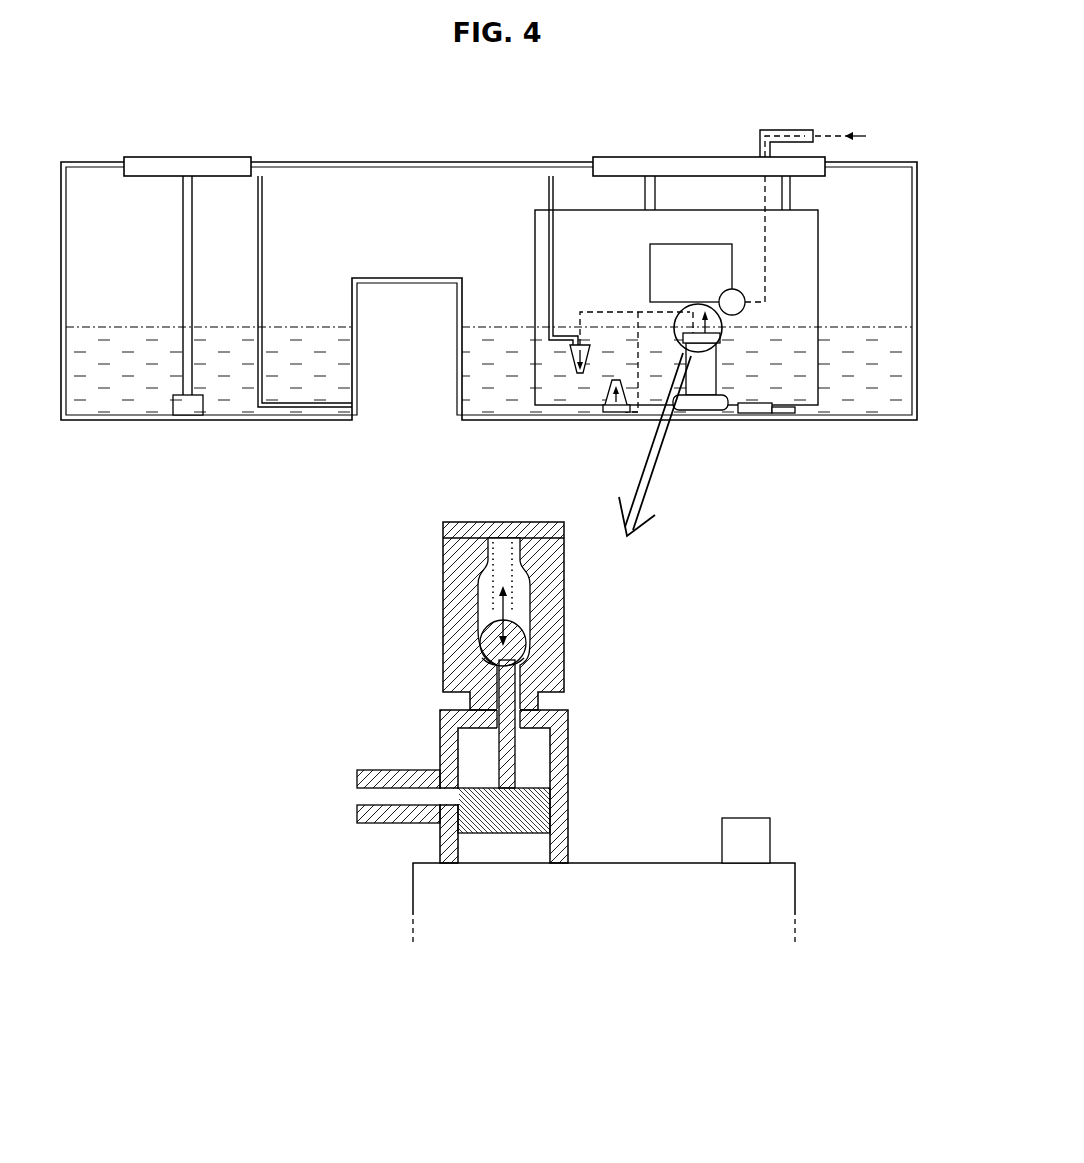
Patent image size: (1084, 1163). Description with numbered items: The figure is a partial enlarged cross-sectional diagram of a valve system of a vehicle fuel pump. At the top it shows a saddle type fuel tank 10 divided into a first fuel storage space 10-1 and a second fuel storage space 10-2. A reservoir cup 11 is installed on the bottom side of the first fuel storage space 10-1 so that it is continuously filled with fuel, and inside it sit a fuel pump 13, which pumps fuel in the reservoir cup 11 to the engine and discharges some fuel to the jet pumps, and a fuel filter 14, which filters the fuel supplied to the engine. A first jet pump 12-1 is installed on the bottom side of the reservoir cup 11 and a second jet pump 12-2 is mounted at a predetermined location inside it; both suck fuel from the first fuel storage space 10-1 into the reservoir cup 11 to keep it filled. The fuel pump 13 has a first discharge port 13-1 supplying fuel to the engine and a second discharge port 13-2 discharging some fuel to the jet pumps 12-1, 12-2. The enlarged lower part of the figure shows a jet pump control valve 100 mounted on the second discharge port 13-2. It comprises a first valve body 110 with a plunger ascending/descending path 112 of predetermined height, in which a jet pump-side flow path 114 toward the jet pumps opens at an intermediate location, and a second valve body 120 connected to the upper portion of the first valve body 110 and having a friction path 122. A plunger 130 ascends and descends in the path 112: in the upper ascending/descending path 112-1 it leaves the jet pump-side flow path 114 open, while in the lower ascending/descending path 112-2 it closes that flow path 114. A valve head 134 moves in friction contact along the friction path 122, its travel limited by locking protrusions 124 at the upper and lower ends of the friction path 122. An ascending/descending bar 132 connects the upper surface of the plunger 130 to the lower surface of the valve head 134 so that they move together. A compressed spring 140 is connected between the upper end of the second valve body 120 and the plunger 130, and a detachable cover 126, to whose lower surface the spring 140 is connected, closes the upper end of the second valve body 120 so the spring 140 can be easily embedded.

The saddle type fuel tank 10 is at (447, 163).
The first fuel storage space 10-1 is at (863, 393).
The second fuel storage space 10-2 is at (128, 385).
The reservoir cup 11 is at (818, 268).
The first jet pump 12-1 is at (607, 398).
The second jet pump 12-2 is at (572, 360).
The fuel pump 13 is at (728, 378).
The first discharge port 13-1 is at (762, 842).
The second discharge port 13-2 is at (498, 857).
The fuel filter 14 is at (650, 270).
The jet pump control valve 100 is at (631, 675).
The first valve body 110 is at (572, 740).
The plunger ascending/descending path 112 is at (672, 770).
The upper ascending/descending path 112-1 is at (537, 763).
The lower ascending/descending path 112-2 is at (537, 849).
The jet pump-side flow path 114 is at (383, 796).
The second valve body 120 is at (567, 565).
The friction path 122 is at (530, 630).
The locking protrusions 124 is at (520, 548).
The cover 126 is at (443, 532).
The plunger 130 is at (467, 824).
The ascending/descending bar 132 is at (495, 757).
The valve head 134 is at (485, 628).
The spring 140 is at (493, 580).